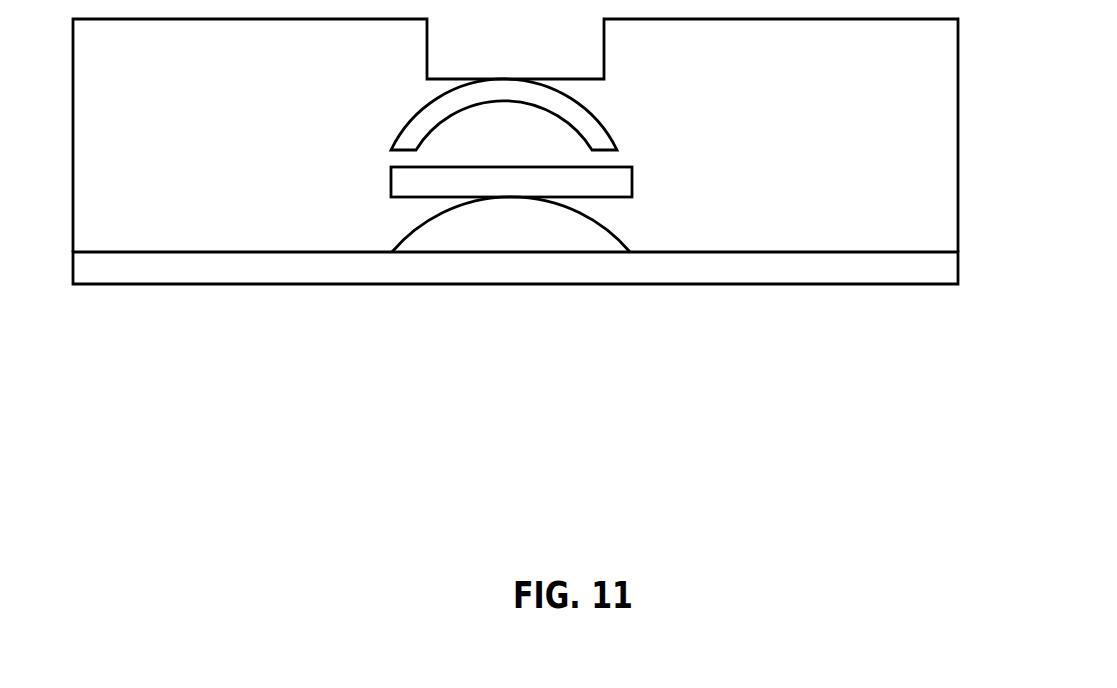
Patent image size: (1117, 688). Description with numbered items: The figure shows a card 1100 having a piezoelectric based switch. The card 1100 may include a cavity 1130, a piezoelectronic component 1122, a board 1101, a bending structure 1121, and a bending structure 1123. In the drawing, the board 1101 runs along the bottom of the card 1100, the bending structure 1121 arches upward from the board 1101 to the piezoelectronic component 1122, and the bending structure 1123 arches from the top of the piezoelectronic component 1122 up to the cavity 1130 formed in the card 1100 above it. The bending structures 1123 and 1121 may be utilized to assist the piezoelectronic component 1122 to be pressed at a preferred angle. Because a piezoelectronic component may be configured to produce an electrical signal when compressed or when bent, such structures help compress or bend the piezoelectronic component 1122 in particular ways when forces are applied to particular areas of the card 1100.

The card 1100 is at (1060, 151).
The board 1101 is at (302, 252).
The bending structure 1121 is at (395, 245).
The piezoelectronic component 1122 is at (391, 190).
The bending structure 1123 is at (405, 118).
The cavity 1130 is at (570, 79).